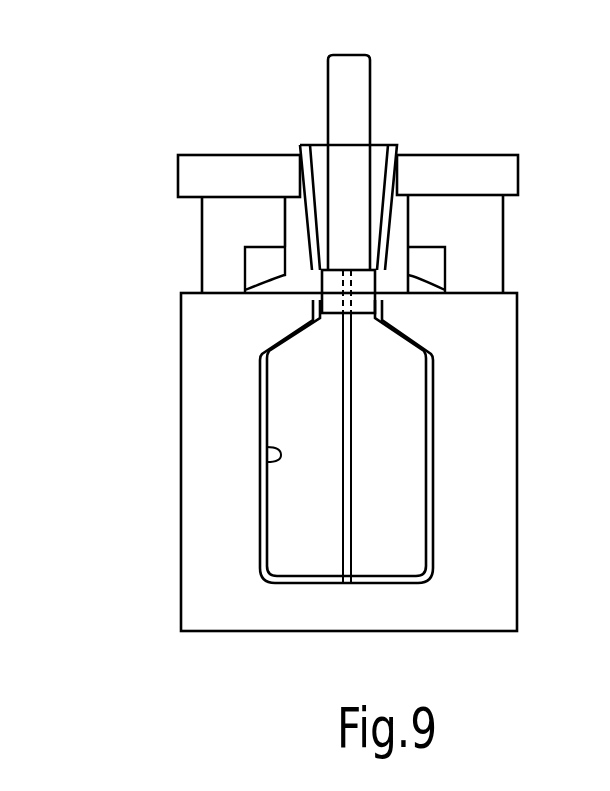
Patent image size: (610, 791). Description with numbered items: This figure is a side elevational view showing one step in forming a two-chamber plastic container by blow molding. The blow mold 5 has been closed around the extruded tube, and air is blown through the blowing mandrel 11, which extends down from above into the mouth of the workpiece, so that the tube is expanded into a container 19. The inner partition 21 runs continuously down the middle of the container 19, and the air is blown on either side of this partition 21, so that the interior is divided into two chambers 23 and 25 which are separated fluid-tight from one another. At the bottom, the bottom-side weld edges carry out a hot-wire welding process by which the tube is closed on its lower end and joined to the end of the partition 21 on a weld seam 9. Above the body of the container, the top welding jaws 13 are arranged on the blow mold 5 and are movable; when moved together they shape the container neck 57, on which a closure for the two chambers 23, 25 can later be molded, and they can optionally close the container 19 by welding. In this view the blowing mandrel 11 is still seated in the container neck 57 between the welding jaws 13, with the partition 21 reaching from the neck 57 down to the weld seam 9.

The blow mold 5 is at (193, 432).
The weld seam 9 is at (347, 580).
The blowing mandrel 11 is at (345, 175).
The top welding jaws 13 is at (213, 230).
The container 19 is at (265, 470).
The inner partition 21 is at (351, 420).
The chamber 23 is at (318, 512).
The chamber 25 is at (390, 492).
The container neck 57 is at (310, 293).